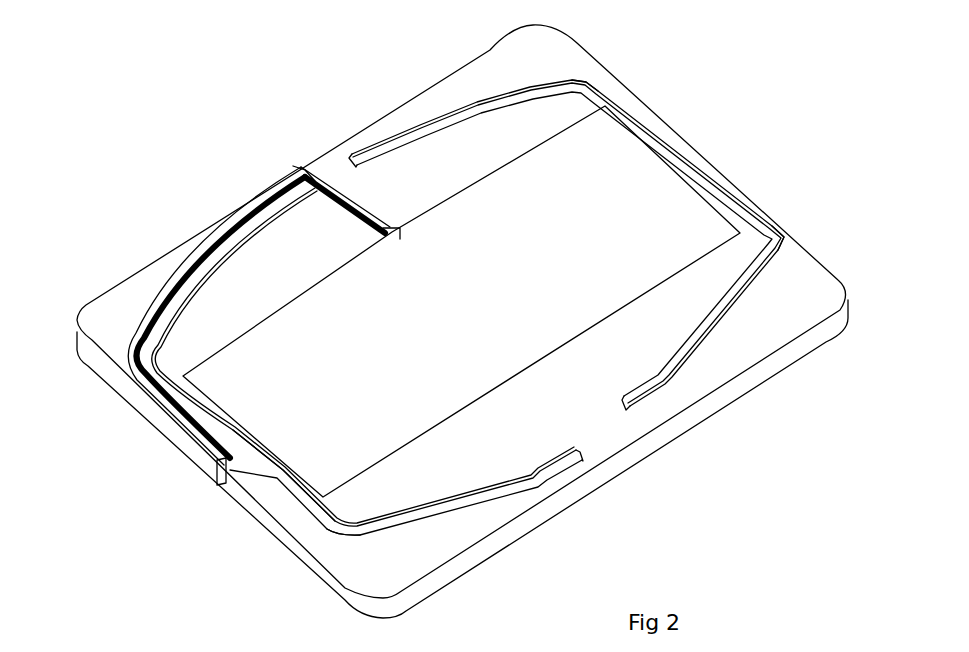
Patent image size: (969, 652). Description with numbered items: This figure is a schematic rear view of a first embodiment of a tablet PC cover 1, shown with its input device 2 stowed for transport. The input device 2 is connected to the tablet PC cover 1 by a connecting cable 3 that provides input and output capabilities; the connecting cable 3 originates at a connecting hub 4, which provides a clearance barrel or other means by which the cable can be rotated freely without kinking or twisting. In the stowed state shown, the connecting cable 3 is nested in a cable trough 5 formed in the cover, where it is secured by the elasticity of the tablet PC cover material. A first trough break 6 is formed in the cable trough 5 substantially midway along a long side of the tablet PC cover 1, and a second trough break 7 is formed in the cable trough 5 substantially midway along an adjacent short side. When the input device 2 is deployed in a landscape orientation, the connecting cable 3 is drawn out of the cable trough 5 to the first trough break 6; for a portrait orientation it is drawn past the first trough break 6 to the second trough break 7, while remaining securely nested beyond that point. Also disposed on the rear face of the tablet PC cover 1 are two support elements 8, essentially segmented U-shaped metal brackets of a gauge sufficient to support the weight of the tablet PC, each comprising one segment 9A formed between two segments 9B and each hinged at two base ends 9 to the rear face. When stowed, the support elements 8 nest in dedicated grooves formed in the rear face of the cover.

The tablet PC cover 1 is at (567, 53).
The input device 2 is at (627, 158).
The connecting cable 3 is at (250, 202).
The connecting hub 4 is at (383, 236).
The cable trough 5 is at (363, 203).
The first trough break 6 is at (297, 167).
The second trough break 7 is at (213, 483).
The support element 8 is at (745, 215).
The end 9 is at (348, 157).
The segment 9A is at (610, 95).
The segment 9B is at (477, 102).